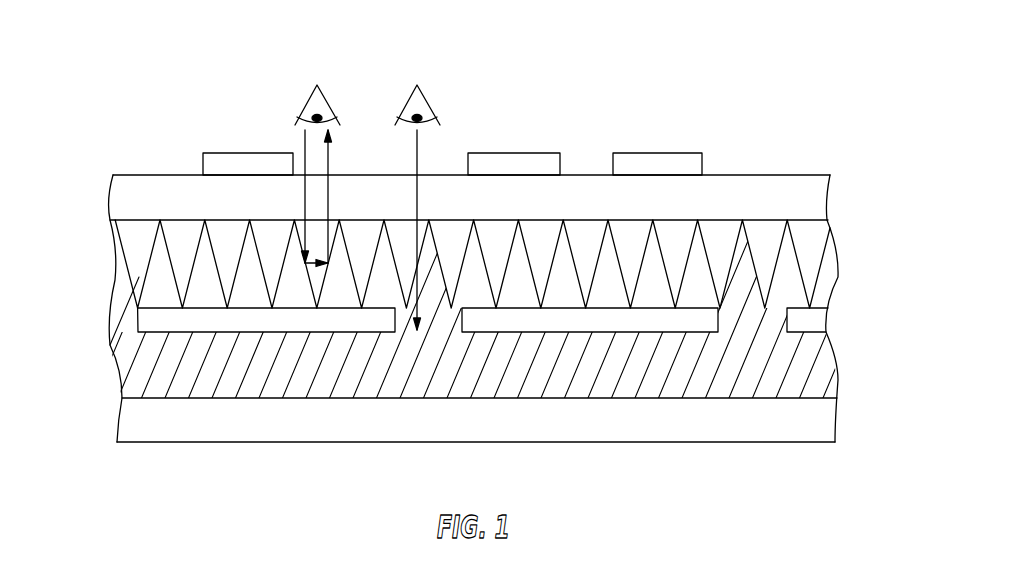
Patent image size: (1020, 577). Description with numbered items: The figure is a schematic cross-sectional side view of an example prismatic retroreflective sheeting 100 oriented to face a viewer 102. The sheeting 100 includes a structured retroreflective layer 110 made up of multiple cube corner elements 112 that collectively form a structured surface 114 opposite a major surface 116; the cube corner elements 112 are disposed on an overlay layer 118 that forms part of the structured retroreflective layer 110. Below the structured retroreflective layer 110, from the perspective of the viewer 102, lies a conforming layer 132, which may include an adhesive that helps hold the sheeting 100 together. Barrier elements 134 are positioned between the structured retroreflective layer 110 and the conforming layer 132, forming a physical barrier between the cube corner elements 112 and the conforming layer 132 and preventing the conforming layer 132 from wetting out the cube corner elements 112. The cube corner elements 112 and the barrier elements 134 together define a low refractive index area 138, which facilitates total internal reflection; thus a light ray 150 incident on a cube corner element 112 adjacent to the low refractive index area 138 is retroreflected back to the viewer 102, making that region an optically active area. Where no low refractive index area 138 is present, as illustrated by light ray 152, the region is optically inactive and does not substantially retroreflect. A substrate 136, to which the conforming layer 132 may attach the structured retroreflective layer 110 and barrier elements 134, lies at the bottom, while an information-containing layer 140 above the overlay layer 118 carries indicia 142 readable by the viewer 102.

The prismatic retroreflective sheeting 100 is at (140, 68).
The viewer 102 is at (305, 97).
The structured retroreflective layer 110 is at (853, 175).
The cube corner elements 112 is at (183, 230).
The structured surface 114 is at (130, 263).
The major surface 116 is at (763, 218).
The overlay layer 118 is at (122, 203).
The conforming layer 132 is at (125, 383).
The barrier element 134 is at (200, 325).
The substrate 136 is at (130, 420).
The low refractive index area 138 is at (152, 292).
The information-containing layer 140 is at (858, 153).
The indicia 142 is at (657, 162).
The light ray 150 is at (304, 148).
The light ray 152 is at (420, 148).